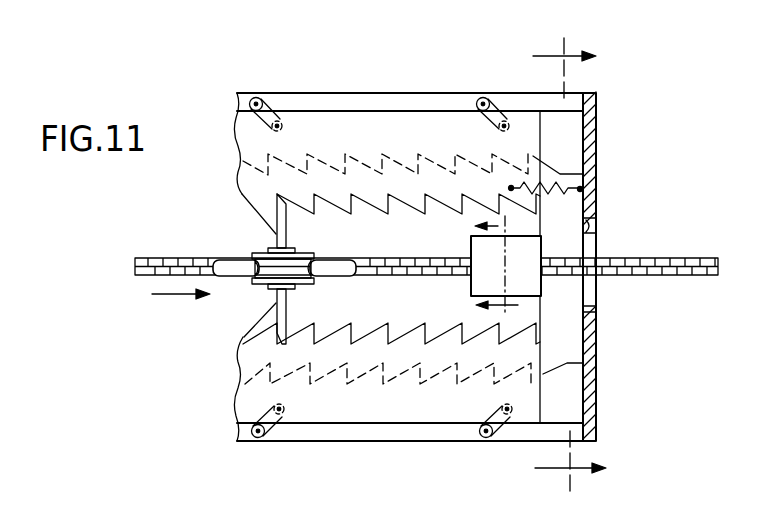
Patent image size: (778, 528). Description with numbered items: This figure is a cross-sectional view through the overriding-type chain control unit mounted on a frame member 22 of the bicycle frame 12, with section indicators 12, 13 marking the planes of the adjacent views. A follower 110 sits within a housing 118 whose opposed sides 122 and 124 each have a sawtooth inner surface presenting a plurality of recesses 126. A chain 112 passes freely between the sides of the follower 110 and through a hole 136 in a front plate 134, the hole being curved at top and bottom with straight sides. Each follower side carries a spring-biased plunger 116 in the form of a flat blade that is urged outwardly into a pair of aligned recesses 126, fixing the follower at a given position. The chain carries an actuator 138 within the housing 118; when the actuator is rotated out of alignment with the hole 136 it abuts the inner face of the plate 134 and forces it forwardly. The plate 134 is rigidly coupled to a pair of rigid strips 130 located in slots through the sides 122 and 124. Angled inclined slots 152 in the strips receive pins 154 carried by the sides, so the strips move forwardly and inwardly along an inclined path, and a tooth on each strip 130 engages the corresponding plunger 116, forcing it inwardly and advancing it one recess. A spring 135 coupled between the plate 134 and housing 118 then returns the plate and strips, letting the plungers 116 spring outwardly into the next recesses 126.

The bicycle frame 12 is at (570, 271).
The section line 13- 13 is at (505, 264).
The frame member 22 is at (236, 259).
The follower 110 is at (302, 281).
The chain 112 is at (147, 278).
The spring-biased plunger 116 is at (276, 243).
The housing 118 is at (601, 118).
The side 122 is at (418, 127).
The side 124 is at (345, 405).
The recess 126 is at (401, 206).
The rigid strip 130 is at (349, 103).
The front plate 134 is at (598, 140).
The spring 135 is at (586, 190).
The hole 136 is at (598, 229).
The actuator 138 is at (529, 298).
The angled inclined slot 152 is at (262, 99).
The pin 154 is at (271, 126).